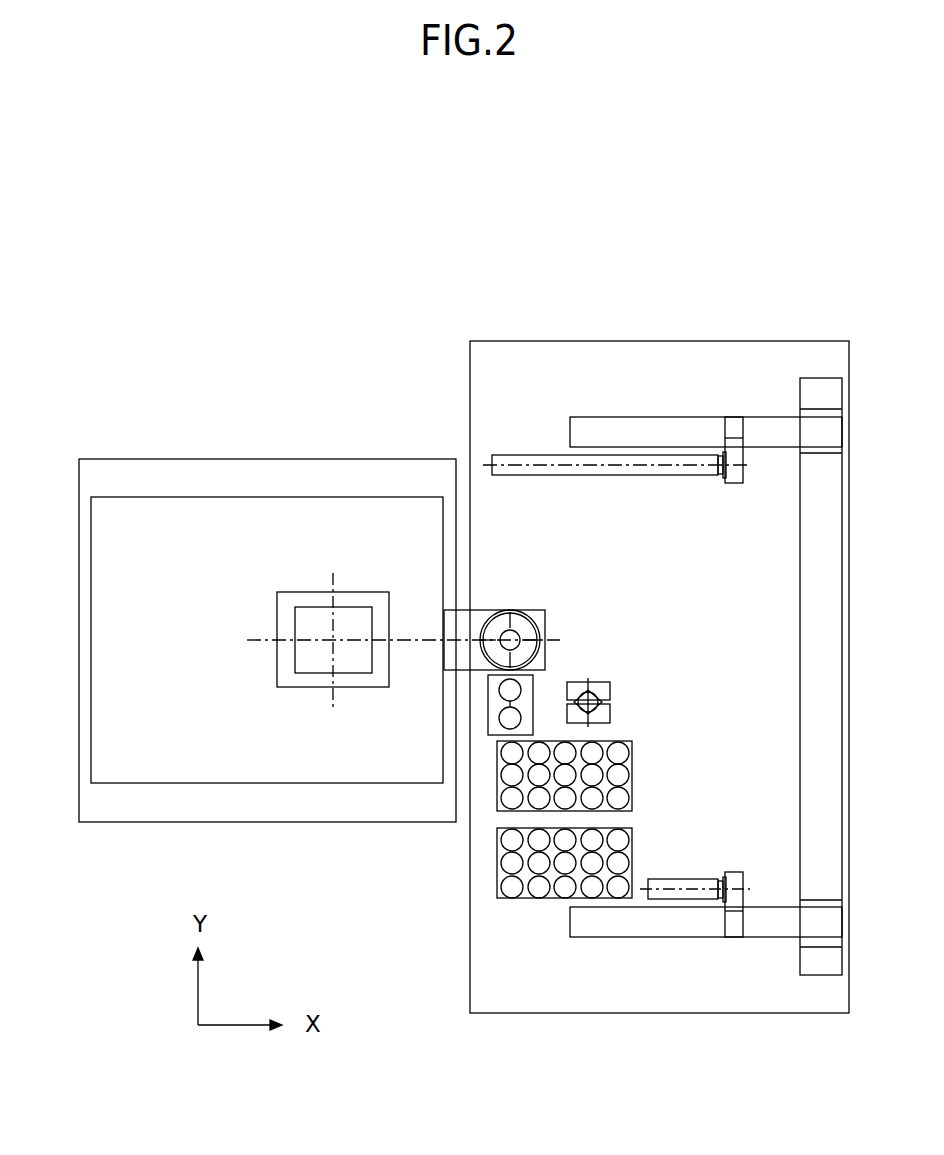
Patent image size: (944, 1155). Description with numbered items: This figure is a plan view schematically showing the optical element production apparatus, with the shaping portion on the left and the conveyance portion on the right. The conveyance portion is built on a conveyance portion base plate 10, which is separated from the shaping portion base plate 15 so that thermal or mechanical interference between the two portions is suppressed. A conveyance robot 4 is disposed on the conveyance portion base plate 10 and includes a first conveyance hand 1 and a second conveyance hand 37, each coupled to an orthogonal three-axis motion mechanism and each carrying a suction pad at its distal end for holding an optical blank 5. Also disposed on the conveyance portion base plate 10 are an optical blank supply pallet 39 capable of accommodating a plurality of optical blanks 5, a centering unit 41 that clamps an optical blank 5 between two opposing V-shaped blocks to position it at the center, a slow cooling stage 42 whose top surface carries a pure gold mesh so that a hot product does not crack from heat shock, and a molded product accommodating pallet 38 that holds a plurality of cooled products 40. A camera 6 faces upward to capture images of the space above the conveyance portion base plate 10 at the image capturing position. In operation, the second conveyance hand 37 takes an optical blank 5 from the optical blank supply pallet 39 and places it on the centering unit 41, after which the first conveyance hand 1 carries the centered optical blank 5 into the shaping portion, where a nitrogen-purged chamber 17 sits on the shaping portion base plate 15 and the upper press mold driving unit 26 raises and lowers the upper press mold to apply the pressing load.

The first conveyance hand 1 is at (670, 463).
The conveyance robot 4 is at (812, 492).
The optical blank 5 is at (618, 760).
The camera 6 is at (520, 634).
The conveyance portion base plate 10 is at (492, 992).
The shaping portion base plate 15 is at (353, 812).
The nitrogen-purged chamber 17 is at (262, 792).
The upper press mold driving unit 26 is at (337, 594).
The second conveyance hand 37 is at (665, 893).
The molded product accommodating pallet 38 is at (594, 885).
The optical blank supply pallet 39 is at (599, 774).
The product 40 is at (508, 898).
The centering unit 41 is at (607, 715).
The slow cooling stage 42 is at (517, 707).